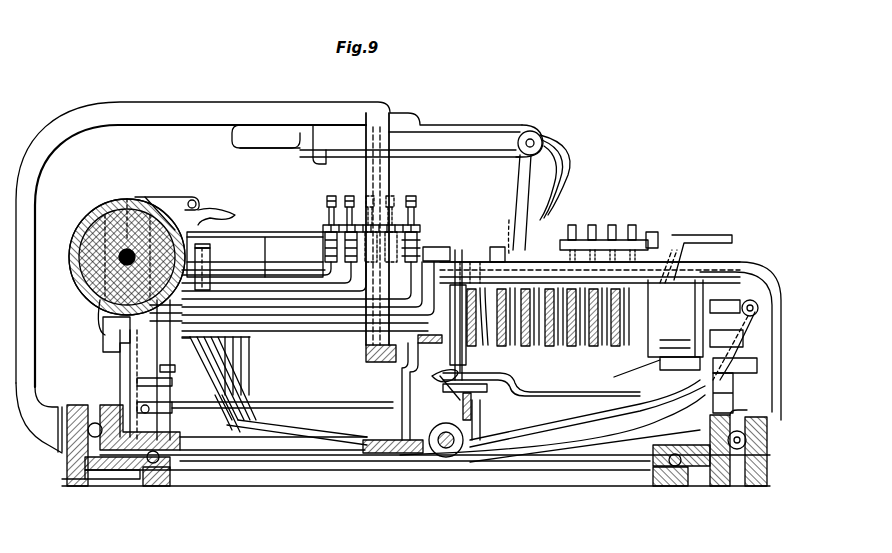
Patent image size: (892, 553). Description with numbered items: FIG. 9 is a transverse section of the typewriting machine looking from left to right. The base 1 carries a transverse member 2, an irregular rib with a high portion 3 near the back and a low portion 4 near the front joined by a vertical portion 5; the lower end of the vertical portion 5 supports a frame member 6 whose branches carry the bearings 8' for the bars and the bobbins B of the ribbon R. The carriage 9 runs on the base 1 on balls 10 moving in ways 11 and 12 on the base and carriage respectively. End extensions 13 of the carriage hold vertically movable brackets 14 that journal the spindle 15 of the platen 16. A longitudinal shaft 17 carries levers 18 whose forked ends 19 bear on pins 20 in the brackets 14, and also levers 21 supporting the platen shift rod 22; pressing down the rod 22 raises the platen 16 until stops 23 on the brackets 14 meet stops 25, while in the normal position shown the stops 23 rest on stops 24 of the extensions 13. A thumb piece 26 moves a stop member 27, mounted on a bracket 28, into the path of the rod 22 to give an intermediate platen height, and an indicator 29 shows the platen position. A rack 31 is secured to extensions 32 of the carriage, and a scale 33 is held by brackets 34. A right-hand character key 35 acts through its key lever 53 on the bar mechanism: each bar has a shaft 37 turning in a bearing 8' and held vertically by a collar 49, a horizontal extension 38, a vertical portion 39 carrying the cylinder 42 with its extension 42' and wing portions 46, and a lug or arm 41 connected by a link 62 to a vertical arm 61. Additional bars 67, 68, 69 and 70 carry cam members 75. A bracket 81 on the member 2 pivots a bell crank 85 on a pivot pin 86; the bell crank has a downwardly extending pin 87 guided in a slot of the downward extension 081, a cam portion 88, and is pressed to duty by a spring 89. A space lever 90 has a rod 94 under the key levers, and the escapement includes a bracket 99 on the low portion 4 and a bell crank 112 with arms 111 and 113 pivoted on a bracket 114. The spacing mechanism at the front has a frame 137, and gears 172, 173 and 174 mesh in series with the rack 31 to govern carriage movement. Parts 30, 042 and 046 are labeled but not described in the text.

The base 1 is at (290, 487).
The transverse member 2 is at (60, 124).
The high portion 3 is at (325, 112).
The low portion 4 is at (748, 262).
The vertical portion 5 is at (392, 180).
The frame member 6 is at (366, 355).
The bearings 8' is at (217, 269).
The carriage 9 is at (700, 445).
The anti-friction balls 10 is at (83, 487).
The ways on the base 11 is at (67, 420).
The ways on the carriage 12 is at (97, 422).
The end extensions 13 is at (120, 362).
The vertically movable brackets 14 is at (146, 382).
The spindle 15 is at (116, 334).
The platen 16 is at (85, 222).
The longitudinal shaft 17 is at (446, 457).
The levers 18 is at (342, 430).
The forked ends 19 is at (175, 405).
The pins 20 is at (125, 470).
The levers 21 is at (580, 462).
The platen shift rod 22 is at (760, 307).
The stops 23 is at (177, 362).
The stops 24 is at (178, 380).
The stops 25 is at (170, 370).
The thumb piece 26 is at (760, 367).
The stop member 27 is at (745, 340).
The bracket 28 is at (734, 394).
The indicator 29 is at (100, 318).
The base plate 30 is at (258, 470).
The rack 31 is at (463, 405).
The extensions 32 is at (476, 440).
The scale 33 is at (434, 335).
The brackets 34 is at (405, 405).
The right hand character keys 35 is at (600, 224).
The shaft 37 is at (212, 247).
The horizontal extension 38 is at (305, 331).
The vertical portion 39 is at (325, 275).
The lug or arm 41 is at (166, 314).
The cylinder 42 is at (338, 246).
The extension 42' is at (426, 232).
The wing portions 46 is at (349, 195).
The collars 49 is at (212, 213).
The right hand key levers 53 is at (570, 350).
The vertical arm 61 is at (240, 355).
The link 62 is at (213, 386).
The bar 67 is at (535, 329).
The bar 68 is at (508, 345).
The bar 69 is at (500, 374).
The bar 70 is at (474, 327).
The cam members 75 is at (490, 255).
The bracket 81 is at (440, 125).
The bell crank 85 is at (480, 150).
The pivot pin 86 is at (536, 135).
The pin 87 is at (235, 168).
The cam portions 88 is at (505, 240).
The springs 89 is at (570, 160).
The space lever 90 is at (442, 415).
The rod 94 is at (635, 375).
The bracket 99 is at (455, 300).
The arm 111 is at (690, 390).
The bell crank 112 is at (685, 370).
The arm 113 is at (676, 333).
The bracket 114 is at (675, 318).
The frame 137 is at (654, 232).
The gear 172 is at (581, 246).
The gear 173 is at (590, 270).
The gear 174 is at (430, 372).
The plate 042 is at (340, 226).
The key 046 is at (416, 208).
The downward extension 081 is at (305, 148).
The bobbins B is at (265, 232).
The ribbon R is at (186, 200).